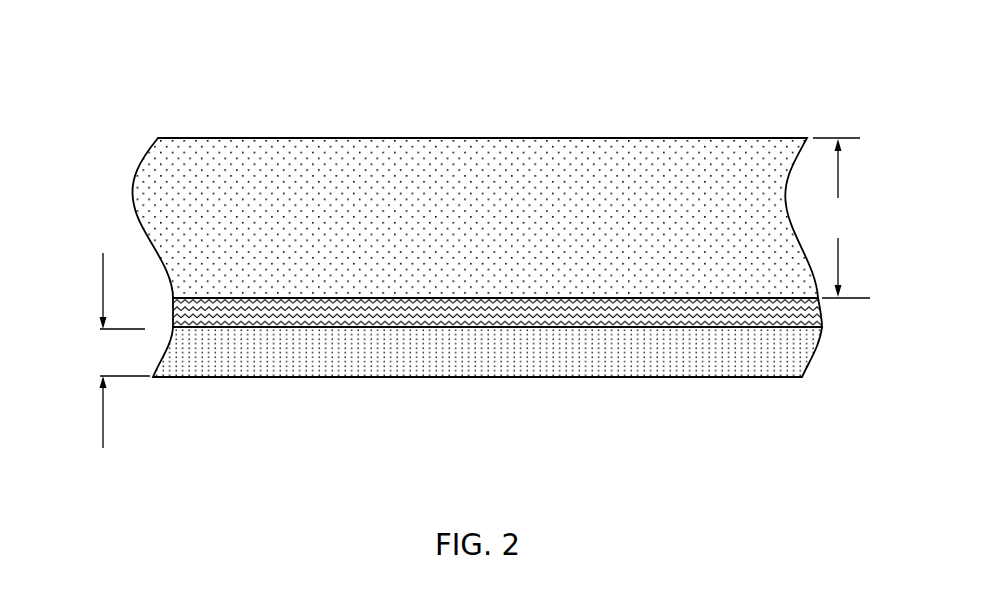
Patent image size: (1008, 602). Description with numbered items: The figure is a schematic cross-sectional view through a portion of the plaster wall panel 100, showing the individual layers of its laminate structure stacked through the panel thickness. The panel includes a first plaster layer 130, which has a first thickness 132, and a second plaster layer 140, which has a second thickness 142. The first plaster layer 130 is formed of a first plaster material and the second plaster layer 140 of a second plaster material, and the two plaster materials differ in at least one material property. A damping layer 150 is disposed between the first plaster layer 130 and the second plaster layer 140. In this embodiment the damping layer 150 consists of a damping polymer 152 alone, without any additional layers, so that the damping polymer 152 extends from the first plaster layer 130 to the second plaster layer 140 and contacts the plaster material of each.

The plaster wall panel 100 is at (240, 84).
The first plaster layer 130 is at (680, 377).
The first thickness 132 is at (97, 350).
The second plaster layer 140 is at (603, 165).
The second thickness 142 is at (841, 218).
The damping layer 150 is at (342, 347).
The damping polymer 152 is at (427, 312).